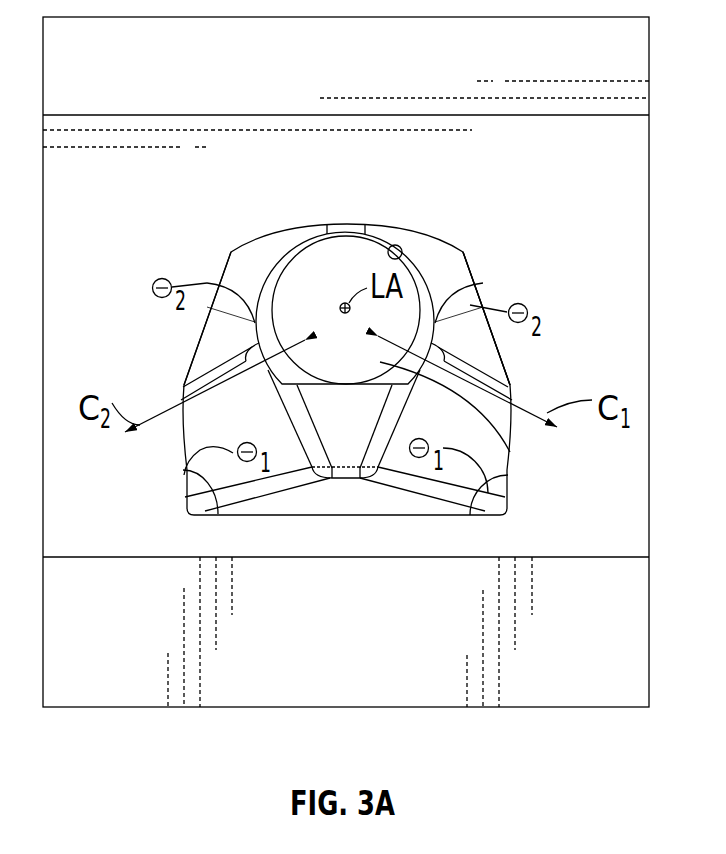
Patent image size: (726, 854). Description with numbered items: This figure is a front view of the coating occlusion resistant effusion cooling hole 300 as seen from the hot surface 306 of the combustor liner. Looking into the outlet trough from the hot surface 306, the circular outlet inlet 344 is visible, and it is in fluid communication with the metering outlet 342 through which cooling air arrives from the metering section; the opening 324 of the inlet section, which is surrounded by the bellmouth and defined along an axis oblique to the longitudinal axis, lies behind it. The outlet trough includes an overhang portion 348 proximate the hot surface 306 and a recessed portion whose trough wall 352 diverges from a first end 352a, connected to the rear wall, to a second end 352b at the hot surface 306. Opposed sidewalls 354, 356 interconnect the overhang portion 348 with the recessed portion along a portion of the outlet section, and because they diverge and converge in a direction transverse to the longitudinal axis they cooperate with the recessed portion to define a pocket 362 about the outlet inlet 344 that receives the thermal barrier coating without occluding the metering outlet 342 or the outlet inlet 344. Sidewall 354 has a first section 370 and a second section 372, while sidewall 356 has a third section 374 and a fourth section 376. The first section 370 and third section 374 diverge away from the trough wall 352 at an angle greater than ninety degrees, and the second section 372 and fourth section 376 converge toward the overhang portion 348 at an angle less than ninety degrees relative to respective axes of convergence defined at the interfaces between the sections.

The effusion cooling hole 300 is at (547, 308).
The hot surface 306 is at (632, 60).
The opening 324 is at (401, 246).
The metering outlet 342 is at (512, 378).
The outlet inlet 344 is at (493, 453).
The overhang portion 348 is at (347, 223).
The trough wall 352 is at (459, 537).
The first end 352a is at (310, 514).
The second end 352b is at (347, 474).
The sidewall 354 is at (193, 340).
The sidewall 356 is at (488, 296).
The pocket 362 is at (507, 351).
The first section 370 is at (186, 462).
The second section 372 is at (247, 265).
The third section 374 is at (505, 462).
The fourth section 376 is at (447, 265).